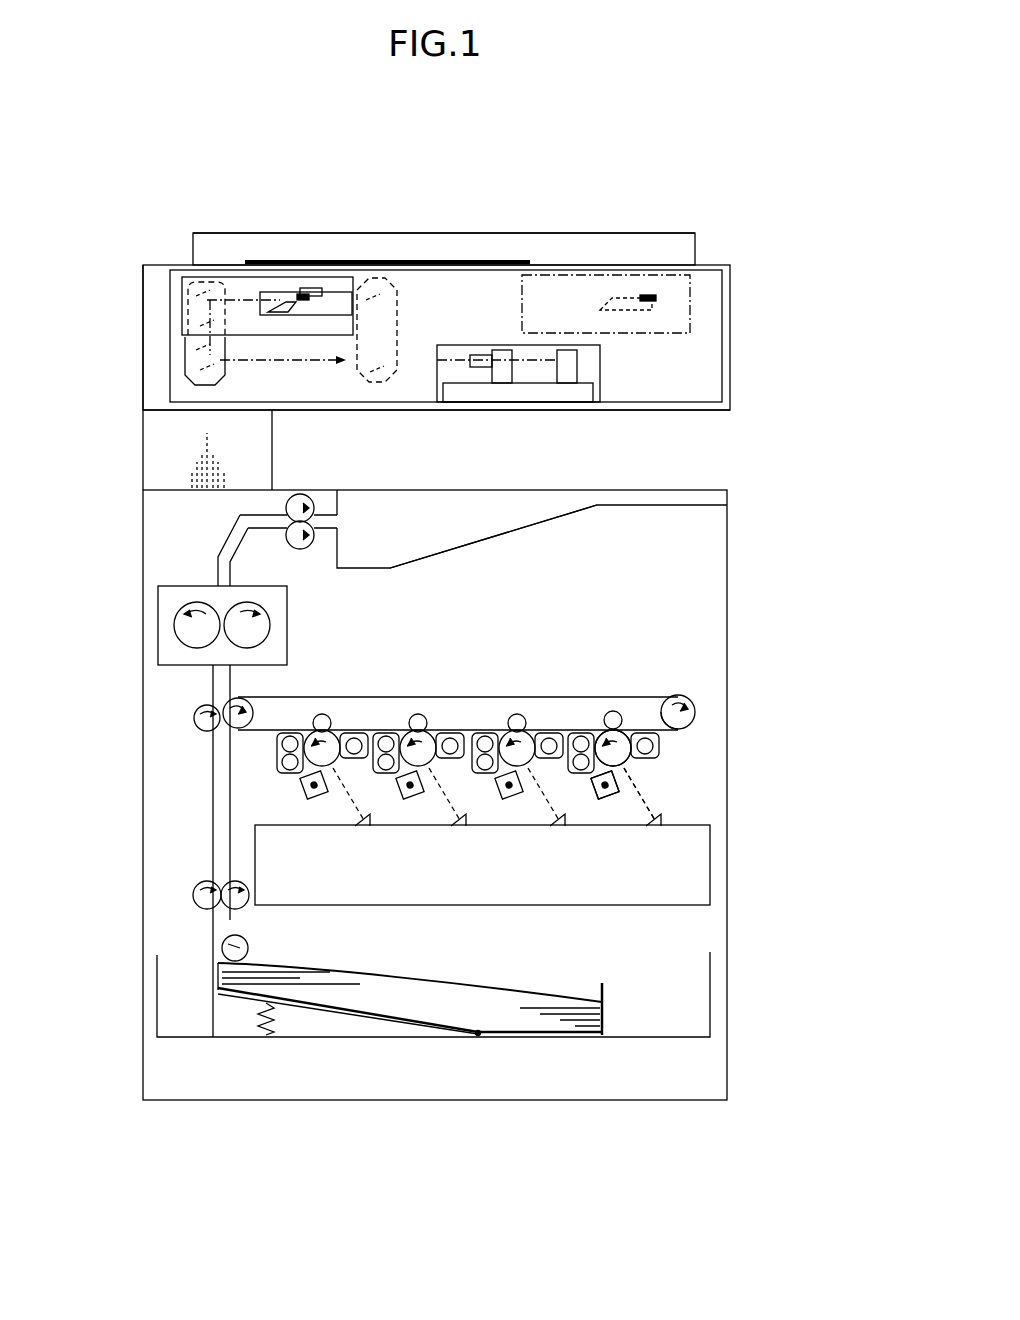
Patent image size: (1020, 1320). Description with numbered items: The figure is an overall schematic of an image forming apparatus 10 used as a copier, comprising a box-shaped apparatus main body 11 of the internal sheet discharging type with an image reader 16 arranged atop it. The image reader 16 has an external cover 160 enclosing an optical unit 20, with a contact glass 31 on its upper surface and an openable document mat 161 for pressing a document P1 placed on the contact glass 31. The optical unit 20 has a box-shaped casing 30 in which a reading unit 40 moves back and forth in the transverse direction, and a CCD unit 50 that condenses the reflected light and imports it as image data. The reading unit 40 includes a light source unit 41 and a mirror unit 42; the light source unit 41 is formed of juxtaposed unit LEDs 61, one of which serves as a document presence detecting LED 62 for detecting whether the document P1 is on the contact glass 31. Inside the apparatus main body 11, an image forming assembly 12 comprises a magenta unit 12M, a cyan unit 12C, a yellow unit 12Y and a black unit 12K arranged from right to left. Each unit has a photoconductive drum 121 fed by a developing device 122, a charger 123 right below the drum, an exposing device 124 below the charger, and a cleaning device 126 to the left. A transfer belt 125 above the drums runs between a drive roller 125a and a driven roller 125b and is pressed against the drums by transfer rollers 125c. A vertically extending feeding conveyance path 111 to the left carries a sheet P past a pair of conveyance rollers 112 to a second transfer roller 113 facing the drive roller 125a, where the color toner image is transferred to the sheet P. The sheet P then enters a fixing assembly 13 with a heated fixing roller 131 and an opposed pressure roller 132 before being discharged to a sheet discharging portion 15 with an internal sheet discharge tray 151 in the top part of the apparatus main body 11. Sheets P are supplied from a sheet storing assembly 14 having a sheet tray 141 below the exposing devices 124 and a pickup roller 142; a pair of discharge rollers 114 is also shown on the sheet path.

The image forming apparatus 10 is at (815, 432).
The apparatus main body 11 is at (736, 545).
The image forming assembly 12 is at (620, 620).
The black unit 12K is at (346, 690).
The yellow unit 12Y is at (421, 690).
The cyan unit 12C is at (518, 690).
The magenta unit 12M is at (613, 690).
The fixing assembly 13 is at (65, 588).
The fixing roller 131 is at (245, 603).
The pressure roller 132 is at (180, 620).
The sheet storing assembly 14 is at (332, 1050).
The sheet tray 141 is at (606, 995).
The pickup roller 142 is at (249, 946).
The sheet discharging portion 15 is at (418, 516).
The internal sheet discharge tray 151 is at (487, 540).
The image reader 16 is at (740, 414).
The external cover 160 is at (733, 340).
The document mat 161 is at (567, 243).
The optical unit 20 is at (673, 118).
The casing 30 is at (718, 262).
The contact glass 31 is at (457, 270).
The reading unit 40 is at (365, 165).
The light source unit 41 is at (395, 258).
The mirror unit 42 is at (188, 357).
The CCD unit 50 is at (547, 343).
The unit LED 61 is at (310, 292).
The document presence detecting LED 62 is at (300, 226).
The feeding conveyance path 111 is at (222, 803).
The pair of conveyance rollers 112 is at (232, 908).
The second transfer roller 113 is at (196, 722).
The discharge rollers 114 is at (223, 541).
The photoconductive drum 121 is at (627, 758).
The developing device 122 is at (662, 745).
The charger 123 is at (616, 790).
The exposing device 124 is at (698, 872).
The transfer belt 125 is at (650, 697).
The drive roller 125a is at (250, 700).
The driven roller 125b is at (686, 721).
The transfer roller 125c is at (617, 716).
The cleaning device 126 is at (578, 772).
The sheet P is at (430, 986).
The document P1 is at (512, 317).